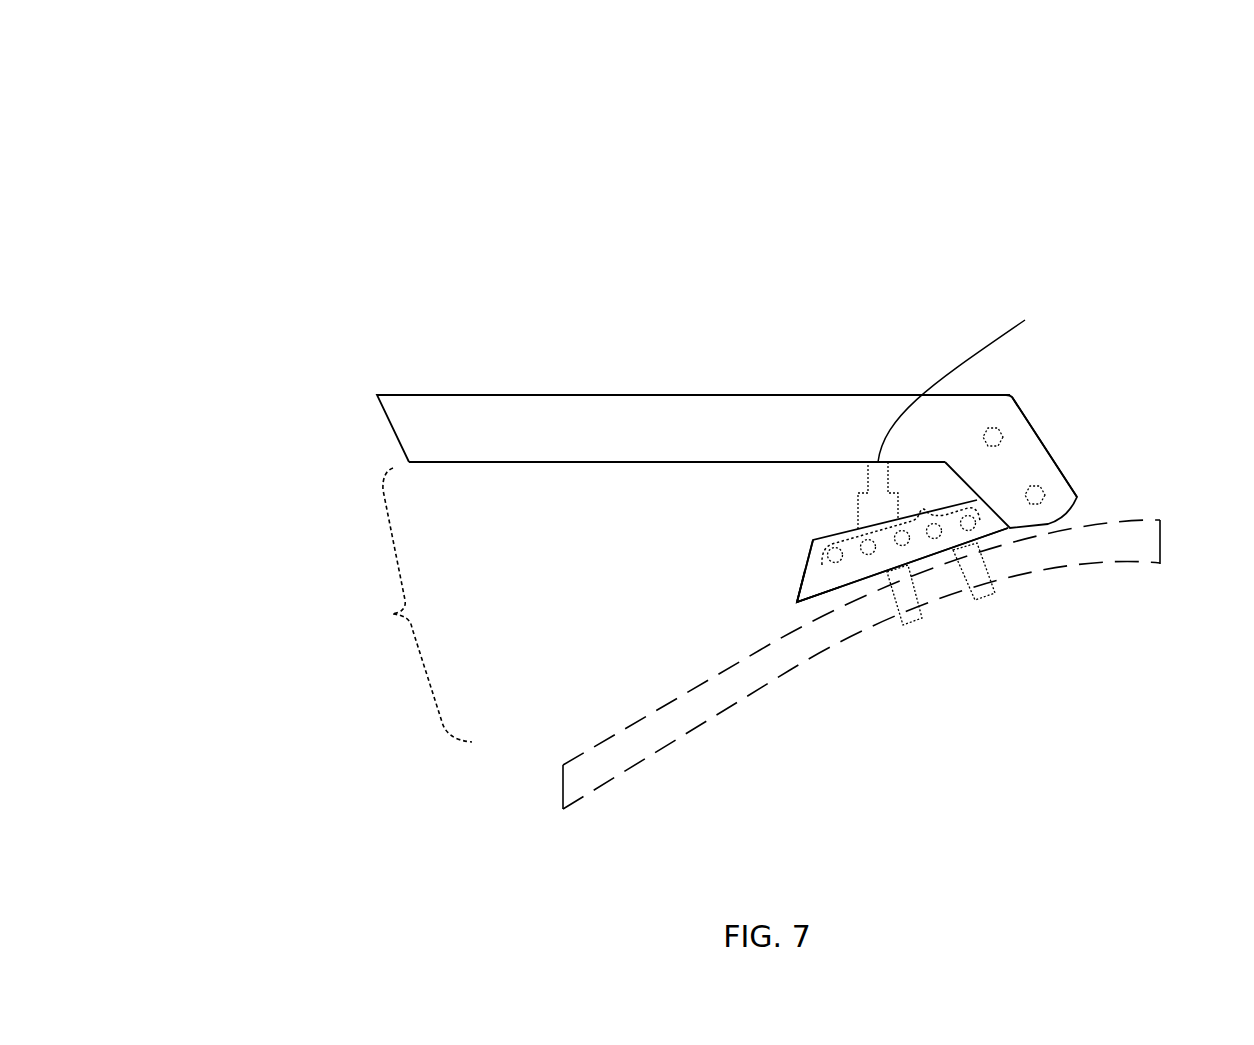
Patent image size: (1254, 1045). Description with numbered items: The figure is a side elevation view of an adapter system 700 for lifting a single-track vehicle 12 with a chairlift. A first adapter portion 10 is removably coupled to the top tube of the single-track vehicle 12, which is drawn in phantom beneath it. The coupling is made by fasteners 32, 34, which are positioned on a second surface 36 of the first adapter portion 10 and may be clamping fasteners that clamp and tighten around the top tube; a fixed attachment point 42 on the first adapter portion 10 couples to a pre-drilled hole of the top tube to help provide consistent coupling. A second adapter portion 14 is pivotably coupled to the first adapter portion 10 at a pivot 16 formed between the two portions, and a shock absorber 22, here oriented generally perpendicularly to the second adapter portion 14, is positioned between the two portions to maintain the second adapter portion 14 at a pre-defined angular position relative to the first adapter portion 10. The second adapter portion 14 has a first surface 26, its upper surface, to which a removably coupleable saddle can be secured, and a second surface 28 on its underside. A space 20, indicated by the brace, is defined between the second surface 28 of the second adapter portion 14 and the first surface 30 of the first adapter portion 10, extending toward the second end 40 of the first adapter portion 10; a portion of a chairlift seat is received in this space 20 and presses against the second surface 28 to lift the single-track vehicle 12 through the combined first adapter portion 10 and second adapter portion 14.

The mounting assembly view 700 is at (214, 49).
The first adapter portion 10 is at (800, 602).
The single-track vehicle 12 is at (583, 735).
The second adapter portion 14 is at (993, 395).
The pivot 16 is at (1070, 452).
The space 20 is at (406, 605).
The shock absorber 22 is at (969, 386).
The first surface 26 is at (648, 371).
The second surface 28 is at (640, 490).
The first surface 30 is at (825, 518).
The fastener 32 is at (905, 625).
The fastener 34 is at (975, 600).
The second surface 36 is at (856, 590).
The second end 40 is at (785, 580).
The fixed attachment point 42 is at (923, 510).